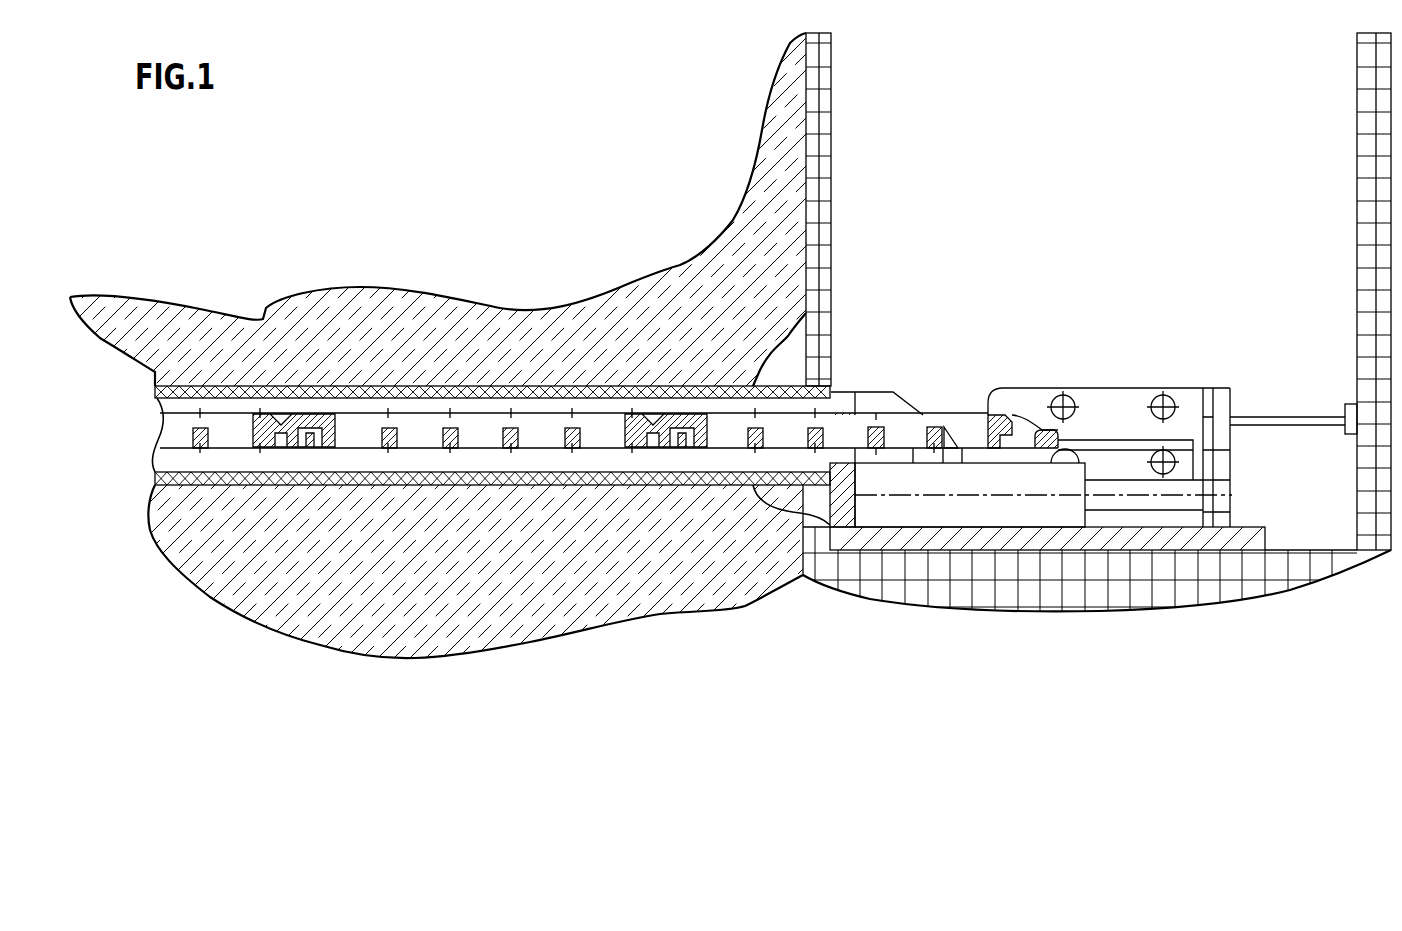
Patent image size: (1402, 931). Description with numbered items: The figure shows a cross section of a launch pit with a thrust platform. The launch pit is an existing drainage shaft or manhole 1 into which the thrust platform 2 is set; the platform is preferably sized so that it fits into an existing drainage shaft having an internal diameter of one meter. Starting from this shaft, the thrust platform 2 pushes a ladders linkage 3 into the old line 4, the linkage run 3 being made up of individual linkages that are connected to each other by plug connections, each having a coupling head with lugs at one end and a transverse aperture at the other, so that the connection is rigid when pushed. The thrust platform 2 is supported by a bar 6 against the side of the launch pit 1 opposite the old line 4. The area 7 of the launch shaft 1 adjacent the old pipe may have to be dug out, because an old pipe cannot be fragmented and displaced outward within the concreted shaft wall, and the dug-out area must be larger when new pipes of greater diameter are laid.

The drainage shaft 1 is at (822, 258).
The thrust platform 2 is at (1104, 407).
The ladders linkage 3 is at (932, 426).
The old line 4 is at (178, 478).
The bar 6 is at (1283, 420).
The dug-out area 7 is at (817, 500).